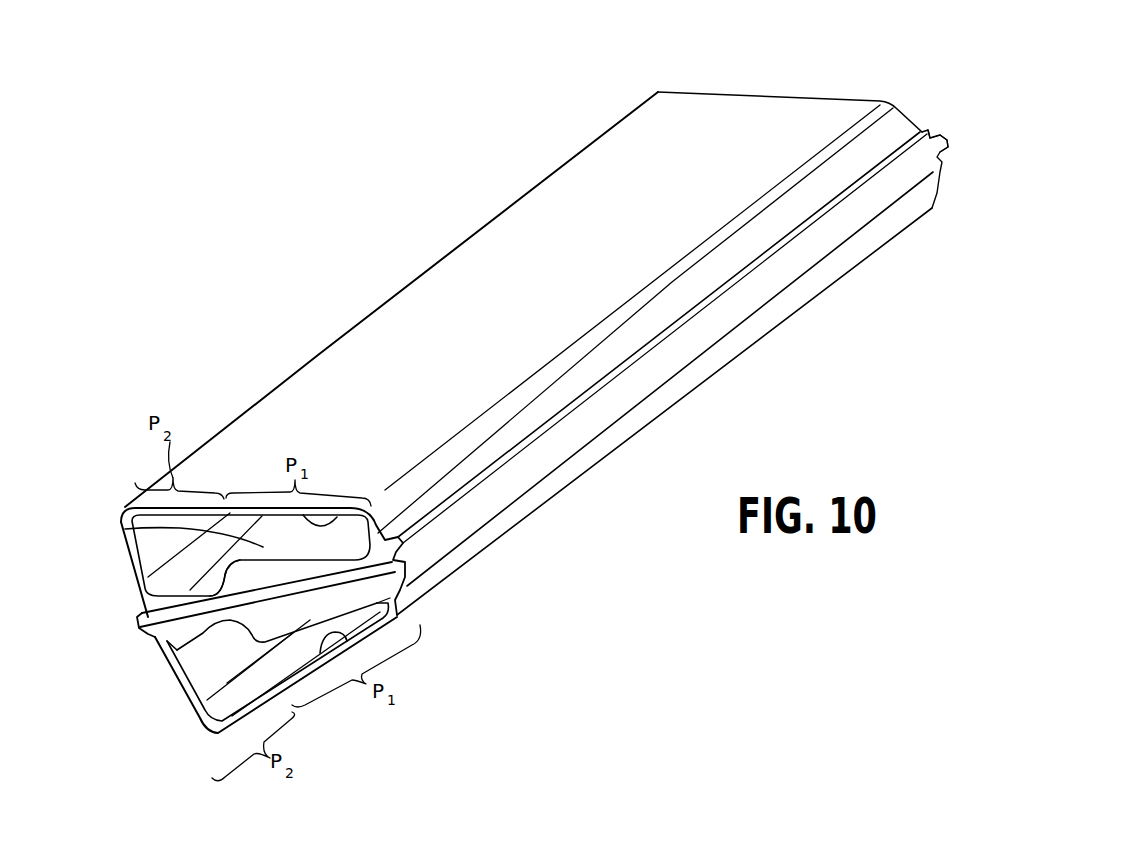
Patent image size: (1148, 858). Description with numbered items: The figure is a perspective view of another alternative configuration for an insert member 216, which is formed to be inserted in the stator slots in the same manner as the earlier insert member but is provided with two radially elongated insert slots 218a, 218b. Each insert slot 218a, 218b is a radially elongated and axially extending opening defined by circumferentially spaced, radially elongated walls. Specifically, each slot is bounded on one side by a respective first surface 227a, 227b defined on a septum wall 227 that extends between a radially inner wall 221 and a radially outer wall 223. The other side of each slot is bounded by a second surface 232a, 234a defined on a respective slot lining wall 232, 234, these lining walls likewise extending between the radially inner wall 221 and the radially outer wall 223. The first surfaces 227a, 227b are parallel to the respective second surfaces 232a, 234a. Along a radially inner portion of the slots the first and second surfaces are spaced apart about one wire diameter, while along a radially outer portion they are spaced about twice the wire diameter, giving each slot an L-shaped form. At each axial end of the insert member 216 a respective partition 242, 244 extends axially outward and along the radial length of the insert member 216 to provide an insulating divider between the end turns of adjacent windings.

The insert member 216 is at (318, 353).
The slot lining wall 234 is at (237, 440).
The second surface 234a is at (331, 522).
The first surface 227b is at (125, 528).
The insert slot 218b is at (157, 547).
The septum wall 227 is at (153, 607).
The partition 242 is at (150, 634).
The first surface 227a is at (404, 588).
The radially inner wall 221 is at (328, 632).
The slot lining wall 232 is at (227, 730).
The radially outer wall 223 is at (160, 638).
The insert slot 218a is at (197, 673).
The second surface 232a is at (343, 633).
The partition 244 is at (948, 145).